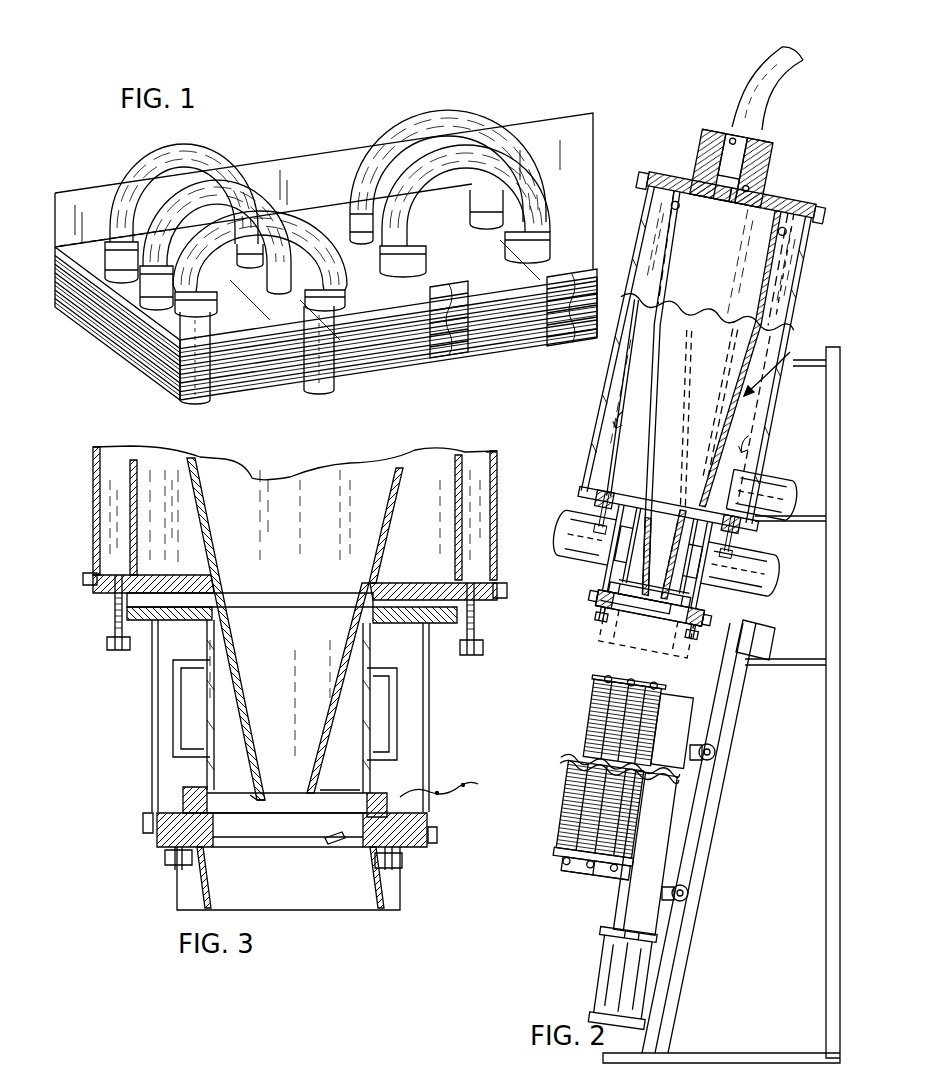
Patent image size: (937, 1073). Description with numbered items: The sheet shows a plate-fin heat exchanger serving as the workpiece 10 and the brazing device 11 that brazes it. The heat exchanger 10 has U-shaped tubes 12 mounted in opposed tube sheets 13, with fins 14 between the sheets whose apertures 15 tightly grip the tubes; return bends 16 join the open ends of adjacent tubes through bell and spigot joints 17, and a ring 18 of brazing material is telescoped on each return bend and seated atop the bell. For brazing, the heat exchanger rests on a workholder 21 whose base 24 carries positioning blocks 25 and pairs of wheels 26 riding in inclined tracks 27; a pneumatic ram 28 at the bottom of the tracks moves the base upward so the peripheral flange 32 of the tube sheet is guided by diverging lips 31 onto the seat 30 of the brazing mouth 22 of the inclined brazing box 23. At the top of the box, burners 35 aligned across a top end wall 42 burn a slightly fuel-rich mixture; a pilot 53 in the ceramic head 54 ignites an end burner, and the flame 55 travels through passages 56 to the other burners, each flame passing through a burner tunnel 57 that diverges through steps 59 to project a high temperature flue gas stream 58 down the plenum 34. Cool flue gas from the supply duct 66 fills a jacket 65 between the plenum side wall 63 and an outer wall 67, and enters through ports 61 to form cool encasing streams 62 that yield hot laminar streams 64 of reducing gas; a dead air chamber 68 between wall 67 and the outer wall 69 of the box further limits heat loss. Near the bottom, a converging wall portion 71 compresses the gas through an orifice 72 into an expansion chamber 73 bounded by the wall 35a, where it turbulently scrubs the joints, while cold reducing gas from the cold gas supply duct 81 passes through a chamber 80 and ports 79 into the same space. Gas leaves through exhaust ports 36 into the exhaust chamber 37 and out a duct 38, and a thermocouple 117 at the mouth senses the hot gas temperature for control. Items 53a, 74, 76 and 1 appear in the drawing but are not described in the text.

In FIG. 1, the workpiece 10 is at (86, 341).
In FIG. 2, the workpiece 10 is at (606, 573).
In FIG. 2, the brazing device 11 is at (586, 611).
In FIG. 1, the U-shaped tubes 12 is at (200, 385).
In FIG. 2, the U-shaped tubes 12 is at (615, 822).
In FIG. 1, the tube sheets 13 is at (97, 262).
In FIG. 2, the tube sheets 13 is at (596, 680).
In FIG. 1, the fins 14 is at (141, 368).
In FIG. 2, the fins 14 is at (590, 770).
In FIG. 1, the apertures 15 is at (457, 300).
In FIG. 1, the return bends 16 is at (250, 210).
In FIG. 1, the bell and spigot joints 17 is at (122, 262).
In FIG. 1, the ring 18 is at (287, 273).
In FIG. 2, the workholder 21 is at (596, 868).
In FIG. 3, the brazing mouth 22 is at (292, 903).
In FIG. 2, the brazing mouth 22 is at (600, 630).
In FIG. 3, the brazing box 23 is at (95, 607).
In FIG. 2, the brazing box 23 is at (591, 451).
In FIG. 2, the base 24 is at (618, 906).
In FIG. 2, the blocks 25 is at (620, 882).
In FIG. 2, the wheels 26 is at (715, 747).
In FIG. 2, the inclined tracks 27 is at (700, 843).
In FIG. 2, the pneumatic ram 28 is at (615, 972).
In FIG. 3, the seat 30 is at (212, 852).
In FIG. 2, the seat 30 is at (662, 645).
In FIG. 3, the lips 31 is at (202, 882).
In FIG. 2, the lips 31 is at (670, 640).
In FIG. 1, the peripheral flange 32 is at (88, 200).
In FIG. 2, the peripheral flange 32 is at (660, 693).
In FIG. 3, the plenum 34 is at (297, 540).
In FIG. 2, the plenum 34 is at (683, 260).
In FIG. 2, the burners 35 is at (745, 156).
In FIG. 3, the wall 35a is at (212, 795).
In FIG. 3, the ports 36 is at (383, 814).
In FIG. 2, the ports 36 is at (600, 596).
In FIG. 3, the exhaust chamber 37 is at (165, 733).
In FIG. 2, the exhaust chamber 37 is at (736, 531).
In FIG. 2, the duct 38 is at (590, 546).
In FIG. 2, the top end wall 42 is at (795, 206).
In FIG. 3, the pilot 53 is at (124, 501).
In FIG. 3, the outer wall upper portion 53a is at (497, 470).
In FIG. 2, the ceramic head 54 is at (705, 135).
In FIG. 2, the flame 55 is at (692, 186).
In FIG. 2, the passages 56 is at (766, 163).
In FIG. 2, the burner tunnel 57 is at (730, 158).
In FIG. 2, the high temperature flue gas stream 58 is at (790, 252).
In FIG. 2, the steps 59 is at (731, 130).
In FIG. 2, the ports 61 is at (650, 192).
In FIG. 2, the cool flue gas streams 62 is at (776, 301).
In FIG. 3, the plenum side wall 63 is at (403, 480).
In FIG. 2, the plenum side wall 63 is at (792, 278).
In FIG. 2, the hot laminar flow streams 64 is at (788, 360).
In FIG. 3, the jacket 65 is at (165, 475).
In FIG. 2, the jacket 65 is at (630, 432).
In FIG. 2, the cool flue gas supply duct 66 is at (782, 480).
In FIG. 3, the outer wall 67 is at (132, 470).
In FIG. 2, the outer wall 67 is at (766, 413).
In FIG. 2, the dead air chamber 68 is at (612, 353).
In FIG. 3, the outer wall of brazing box 69 is at (352, 783).
In FIG. 2, the outer wall of brazing box 69 is at (606, 373).
In FIG. 3, the converging wall portion 71 is at (380, 565).
In FIG. 2, the converging wall portion 71 is at (720, 480).
In FIG. 3, the orifice 72 is at (275, 792).
In FIG. 2, the orifice 72 is at (640, 640).
In FIG. 3, the expansion chamber 73 is at (200, 823).
In FIG. 2, the expansion chamber 73 is at (700, 611).
In FIG. 3, the right wall 74 is at (418, 740).
In FIG. 3, the left wall 76 is at (153, 712).
In FIG. 3, the ports 79 is at (300, 795).
In FIG. 2, the ports 79 is at (648, 595).
In FIG. 3, the chamber 80 is at (215, 695).
In FIG. 2, the chamber 80 is at (618, 548).
In FIG. 2, the cold gas supply duct 81 is at (756, 571).
In FIG. 3, the thermocouple 117 is at (334, 846).
In FIG. 3, the apparatus 1 is at (67, 574).